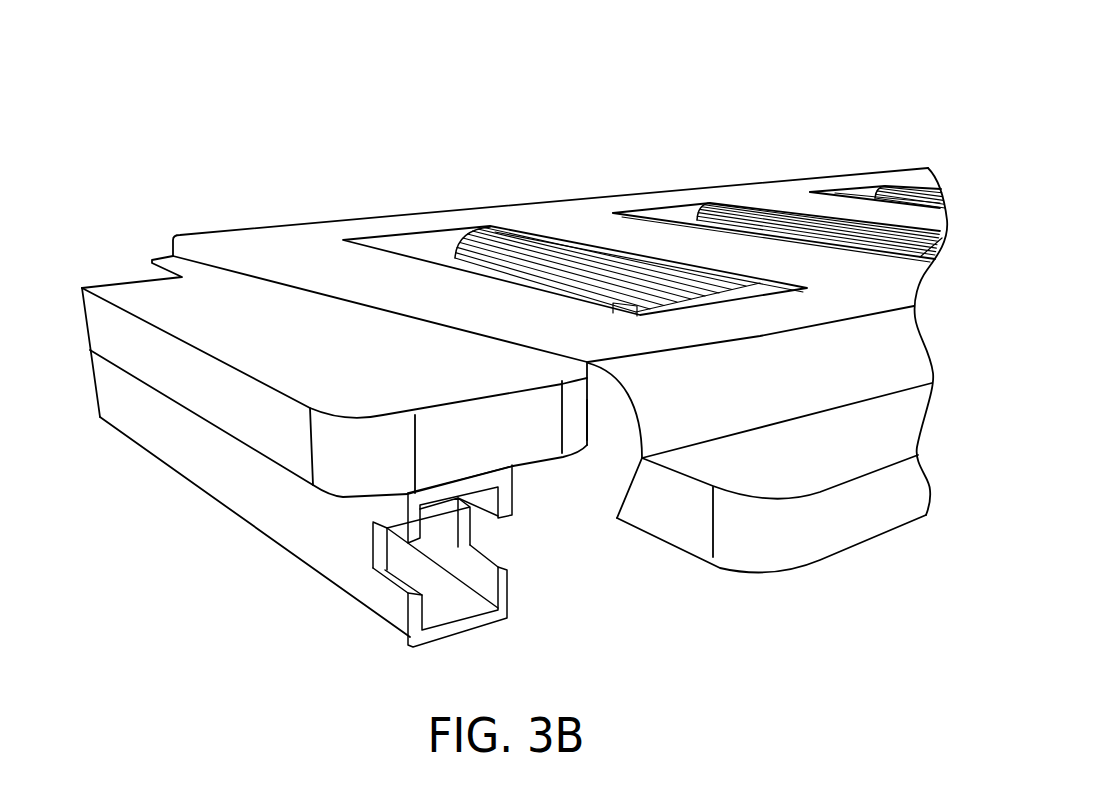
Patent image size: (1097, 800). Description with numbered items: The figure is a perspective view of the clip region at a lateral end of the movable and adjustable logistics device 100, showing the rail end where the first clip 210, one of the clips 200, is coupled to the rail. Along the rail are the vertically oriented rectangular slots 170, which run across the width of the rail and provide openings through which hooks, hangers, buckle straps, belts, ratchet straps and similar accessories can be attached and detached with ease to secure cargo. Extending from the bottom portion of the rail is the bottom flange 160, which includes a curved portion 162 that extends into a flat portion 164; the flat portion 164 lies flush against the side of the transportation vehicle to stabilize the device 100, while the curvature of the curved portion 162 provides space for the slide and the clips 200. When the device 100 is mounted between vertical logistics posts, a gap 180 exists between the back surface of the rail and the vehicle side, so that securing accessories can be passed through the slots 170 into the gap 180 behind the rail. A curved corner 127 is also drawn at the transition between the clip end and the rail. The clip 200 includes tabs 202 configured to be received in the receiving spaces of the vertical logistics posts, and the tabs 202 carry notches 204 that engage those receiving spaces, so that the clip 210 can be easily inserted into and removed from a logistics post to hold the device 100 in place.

The movable and adjustable logistics device 100 is at (562, 320).
The curved corner recess 127 is at (603, 437).
The bottom flange 160 is at (784, 526).
The curved portion 162 is at (757, 388).
The flat portion 164 is at (797, 457).
The slots 170 is at (465, 258).
The gap 180 is at (584, 480).
The clips 200 is at (326, 403).
The tabs 202 is at (398, 628).
The notches 204 is at (391, 575).
The first clip 210 is at (150, 305).